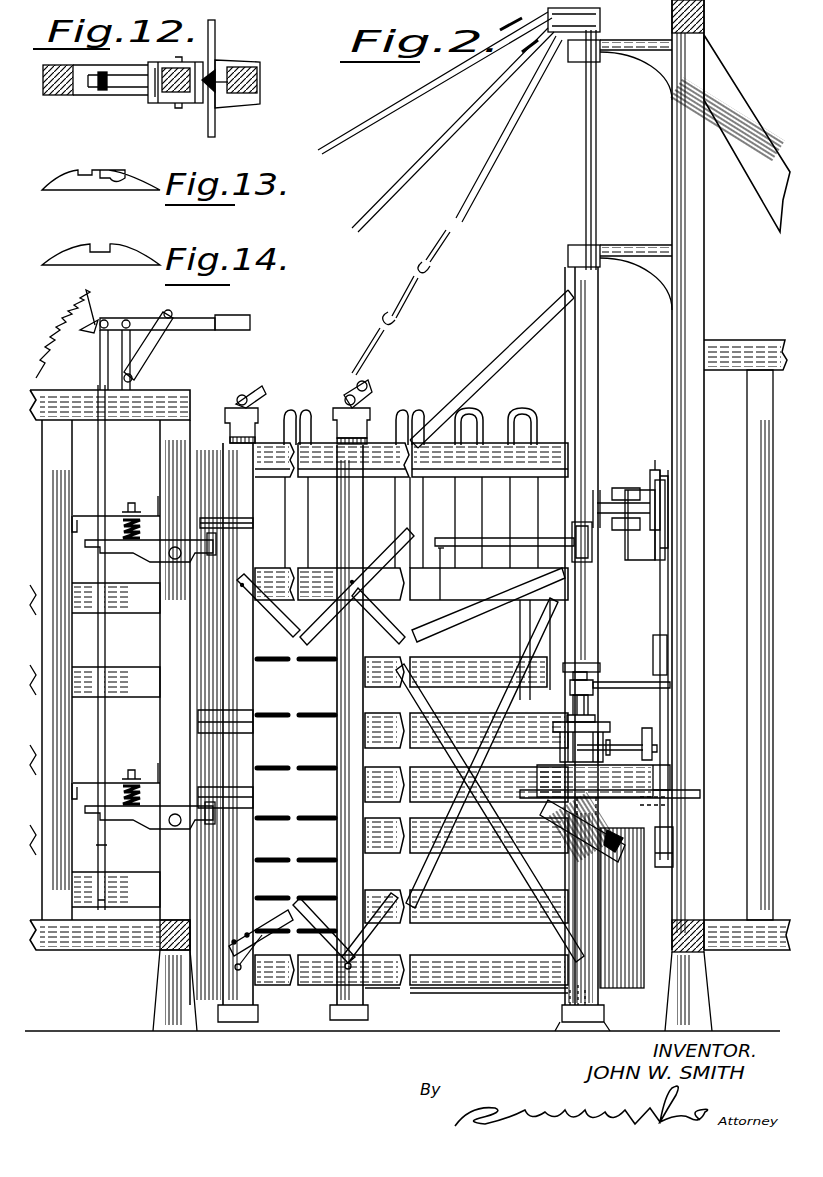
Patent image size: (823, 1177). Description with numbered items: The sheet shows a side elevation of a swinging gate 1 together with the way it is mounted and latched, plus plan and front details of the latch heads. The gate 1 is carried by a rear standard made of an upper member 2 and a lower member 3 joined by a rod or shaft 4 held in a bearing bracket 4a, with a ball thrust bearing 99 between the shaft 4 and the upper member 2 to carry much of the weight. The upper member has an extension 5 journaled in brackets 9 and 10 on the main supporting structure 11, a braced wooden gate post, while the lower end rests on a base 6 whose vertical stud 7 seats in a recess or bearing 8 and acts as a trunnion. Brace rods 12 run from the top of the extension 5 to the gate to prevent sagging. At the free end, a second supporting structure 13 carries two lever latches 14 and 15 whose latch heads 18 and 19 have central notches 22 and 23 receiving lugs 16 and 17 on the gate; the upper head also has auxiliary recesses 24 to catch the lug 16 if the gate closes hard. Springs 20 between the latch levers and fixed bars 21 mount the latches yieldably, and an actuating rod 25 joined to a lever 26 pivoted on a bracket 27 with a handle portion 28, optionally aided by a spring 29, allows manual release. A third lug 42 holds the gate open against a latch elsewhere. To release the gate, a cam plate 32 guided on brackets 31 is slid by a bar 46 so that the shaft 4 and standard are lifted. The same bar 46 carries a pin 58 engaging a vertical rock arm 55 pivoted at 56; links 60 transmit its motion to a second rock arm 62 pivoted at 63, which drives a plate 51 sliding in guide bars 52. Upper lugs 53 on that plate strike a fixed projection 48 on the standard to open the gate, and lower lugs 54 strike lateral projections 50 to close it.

In FIG. 12, the gate 1 is at (262, 82).
In FIG. 2, the gate 1 is at (382, 445).
In FIG. 2, the upper member of standard 2 is at (585, 404).
In FIG. 2, the lower member of standard 3 is at (600, 900).
In FIG. 2, the rod or shaft 4 is at (568, 705).
In FIG. 2, the bearing bracket 4a is at (608, 680).
In FIG. 2, the extension 5 is at (592, 195).
In FIG. 2, the base 6 is at (562, 1018).
In FIG. 2, the vertical stud 7 is at (582, 1024).
In FIG. 2, the recess or bearing 8 is at (560, 460).
In FIG. 2, the bracket 9 is at (598, 60).
In FIG. 2, the bracket 10 is at (594, 256).
In FIG. 2, the main supporting structure 11 is at (688, 332).
In FIG. 2, the brace rods 12 is at (468, 192).
In FIG. 12, the second supporting structure 13 is at (187, 93).
In FIG. 2, the second supporting structure 13 is at (180, 484).
In FIG. 12, the upper latch 14 is at (150, 104).
In FIG. 2, the upper latch 14 is at (198, 558).
In FIG. 2, the lower latch 15 is at (200, 826).
In FIG. 12, the lug 16 is at (216, 68).
In FIG. 2, the lug 16 is at (205, 518).
In FIG. 2, the lug 17 is at (204, 787).
In FIG. 12, the latch head 18 is at (215, 130).
In FIG. 13, the latch head 18 is at (55, 188).
In FIG. 2, the latch head 18 is at (217, 552).
In FIG. 14, the latch head 19 is at (68, 262).
In FIG. 2, the latch head 19 is at (217, 822).
In FIG. 2, the springs 20 is at (148, 548).
In FIG. 2, the bars 21 is at (118, 510).
In FIG. 13, the central notch 22 is at (102, 172).
In FIG. 14, the central notch 23 is at (100, 246).
In FIG. 13, the auxiliary recesses 24 is at (82, 172).
In FIG. 12, the actuating rod 25 is at (103, 95).
In FIG. 2, the actuating rod 25 is at (106, 642).
In FIG. 2, the lever 26 is at (120, 318).
In FIG. 2, the bracket 27 is at (124, 358).
In FIG. 2, the handle portion 28 is at (238, 318).
In FIG. 2, the spring 29 is at (62, 360).
In FIG. 2, the brackets 31 is at (603, 781).
In FIG. 2, the cam plate 32 is at (560, 740).
In FIG. 2, the third lug 42 is at (208, 712).
In FIG. 2, the bar 46 is at (621, 793).
In FIG. 2, the fixed projection 48 is at (607, 500).
In FIG. 2, the lateral projections 50 is at (588, 548).
In FIG. 2, the plate 51 is at (658, 515).
In FIG. 2, the guide bars 52 is at (656, 470).
In FIG. 2, the upper lugs 53 is at (636, 488).
In FIG. 2, the lower lugs 54 is at (638, 530).
In FIG. 2, the rock arm 55 is at (660, 798).
In FIG. 2, the pivot 56 is at (673, 847).
In FIG. 2, the pin 58 is at (657, 748).
In FIG. 2, the links 60 is at (670, 707).
In FIG. 2, the second rock arm 62 is at (664, 595).
In FIG. 2, the pivot 63 is at (648, 655).
In FIG. 2, the ball thrust bearing 99 is at (565, 650).